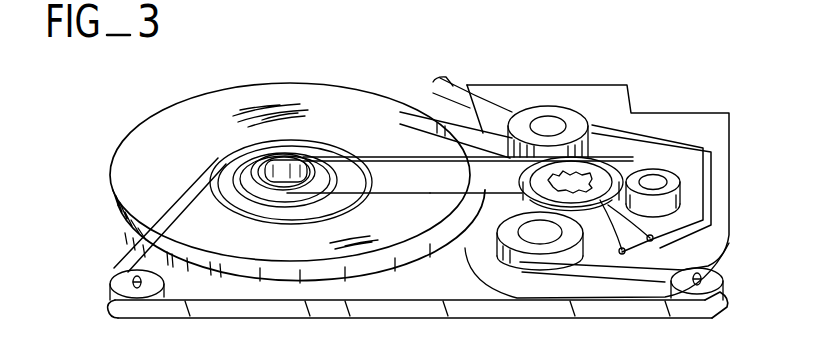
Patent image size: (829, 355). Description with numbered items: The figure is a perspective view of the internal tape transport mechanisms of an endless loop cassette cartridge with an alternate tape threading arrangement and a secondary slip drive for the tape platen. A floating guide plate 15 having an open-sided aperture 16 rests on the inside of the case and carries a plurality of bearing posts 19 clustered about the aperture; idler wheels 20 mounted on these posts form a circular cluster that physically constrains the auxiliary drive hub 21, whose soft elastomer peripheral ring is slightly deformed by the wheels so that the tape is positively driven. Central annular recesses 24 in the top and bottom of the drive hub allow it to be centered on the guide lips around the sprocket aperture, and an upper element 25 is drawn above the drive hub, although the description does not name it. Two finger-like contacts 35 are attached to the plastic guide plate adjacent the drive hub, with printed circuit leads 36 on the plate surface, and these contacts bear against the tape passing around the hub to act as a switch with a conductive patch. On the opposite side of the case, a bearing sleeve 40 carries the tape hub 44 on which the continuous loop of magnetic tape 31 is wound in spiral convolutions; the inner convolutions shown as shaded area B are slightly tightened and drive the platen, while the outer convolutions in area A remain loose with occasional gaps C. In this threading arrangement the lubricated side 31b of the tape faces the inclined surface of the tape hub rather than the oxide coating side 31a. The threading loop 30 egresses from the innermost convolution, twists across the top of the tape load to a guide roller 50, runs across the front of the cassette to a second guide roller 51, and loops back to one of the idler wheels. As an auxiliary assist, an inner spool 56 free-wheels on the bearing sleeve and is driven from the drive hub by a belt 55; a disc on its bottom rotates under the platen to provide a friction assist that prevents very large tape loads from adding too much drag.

The floating guide plate 15 is at (720, 188).
The open-sided aperture 16 is at (505, 252).
The bearing posts 19 is at (547, 120).
The idler wheels 20 is at (559, 106).
The auxiliary drive hub 21 is at (503, 184).
The central annular recesses 24 is at (603, 172).
The upper pulley 25 is at (586, 132).
The threading loop 30 is at (597, 295).
The magnetic tape 31 is at (205, 130).
The oxide coating side 31a is at (446, 124).
The lubricated side 31b is at (255, 317).
The finger-like contacts 35 is at (655, 245).
The printed circuit leads 36 is at (683, 123).
The bearing sleeve 40 is at (264, 162).
The tape hub 44 is at (343, 170).
The guide roller 50 is at (112, 288).
The second guide roller 51 is at (715, 280).
The belt 55 is at (436, 194).
The inner spool 56 is at (265, 197).
The area of loose outer convolutions A is at (135, 142).
The area of inner convolutions B is at (308, 137).
The gaps C is at (200, 138).